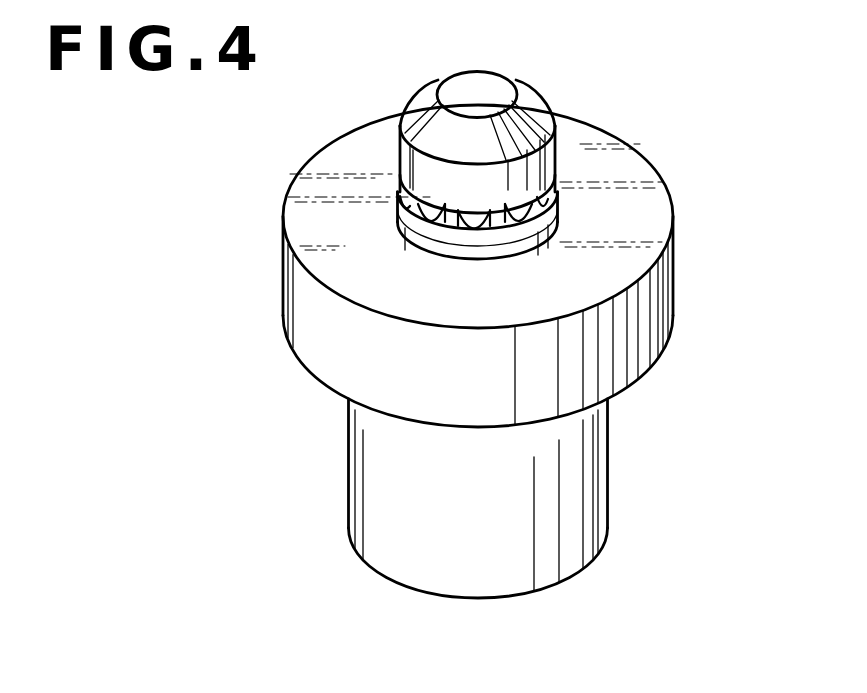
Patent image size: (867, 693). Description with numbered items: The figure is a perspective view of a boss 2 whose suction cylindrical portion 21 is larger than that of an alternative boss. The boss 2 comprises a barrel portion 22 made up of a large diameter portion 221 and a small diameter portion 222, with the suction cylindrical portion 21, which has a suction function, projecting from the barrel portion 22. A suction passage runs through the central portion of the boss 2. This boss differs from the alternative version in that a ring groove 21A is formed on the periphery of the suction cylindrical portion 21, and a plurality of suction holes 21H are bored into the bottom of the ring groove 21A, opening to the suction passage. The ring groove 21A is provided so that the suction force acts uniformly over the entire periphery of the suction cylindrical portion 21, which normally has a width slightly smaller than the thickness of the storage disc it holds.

The boss 2 is at (573, 97).
The suction cylindrical portion 21 is at (405, 165).
The ring groove 21A is at (450, 220).
The suction holes 21H is at (487, 217).
The barrel portion 22 is at (732, 363).
The large diameter portion 221 is at (640, 370).
The small diameter portion 222 is at (600, 468).